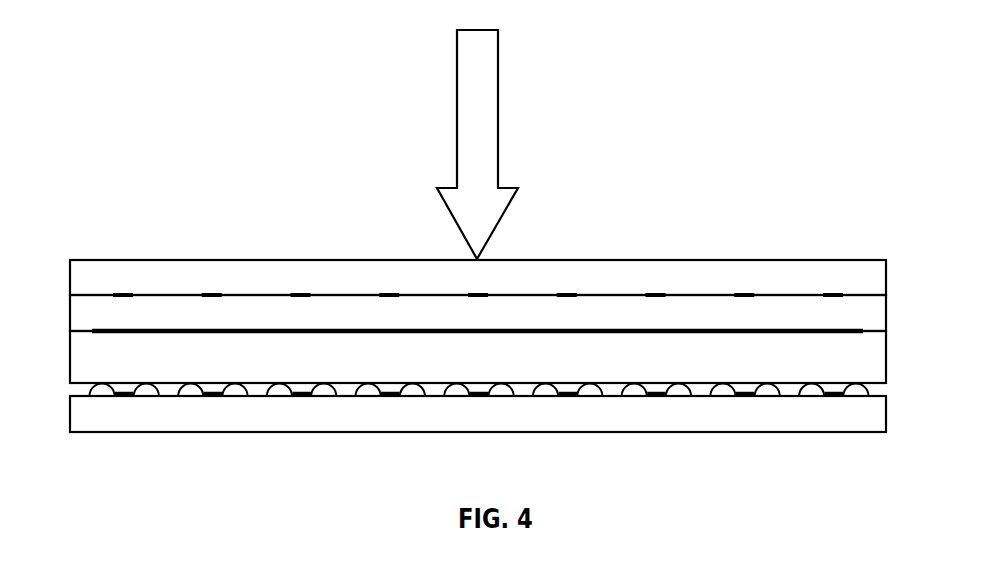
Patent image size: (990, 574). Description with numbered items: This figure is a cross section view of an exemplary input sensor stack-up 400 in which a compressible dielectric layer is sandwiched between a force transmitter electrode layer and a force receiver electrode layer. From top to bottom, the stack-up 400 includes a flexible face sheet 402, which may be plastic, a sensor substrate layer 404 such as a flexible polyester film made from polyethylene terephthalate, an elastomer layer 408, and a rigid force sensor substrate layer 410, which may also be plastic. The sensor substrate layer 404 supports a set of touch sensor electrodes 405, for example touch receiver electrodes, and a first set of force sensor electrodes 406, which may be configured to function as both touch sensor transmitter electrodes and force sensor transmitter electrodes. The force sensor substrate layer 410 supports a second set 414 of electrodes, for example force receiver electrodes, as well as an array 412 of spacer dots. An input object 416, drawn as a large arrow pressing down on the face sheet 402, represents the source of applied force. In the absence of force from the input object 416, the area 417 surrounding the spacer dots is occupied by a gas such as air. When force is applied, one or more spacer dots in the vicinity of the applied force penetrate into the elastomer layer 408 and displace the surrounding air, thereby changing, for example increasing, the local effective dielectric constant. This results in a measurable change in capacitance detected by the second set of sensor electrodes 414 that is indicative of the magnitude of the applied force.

The input sensor stack-up 400 is at (705, 148).
The flexible face sheet 402 is at (827, 258).
The sensor substrate layer 404 is at (886, 312).
The touch sensor electrodes 405 is at (298, 293).
The first set of force sensor electrodes 406 is at (190, 329).
The elastomer layer 408 is at (886, 357).
The force sensor substrate layer 410 is at (886, 413).
The array of spacer dots 412 is at (767, 397).
The second set of electrodes 414 is at (657, 396).
The input object 416 is at (498, 70).
The area surrounding the spacer dots 417 is at (261, 387).